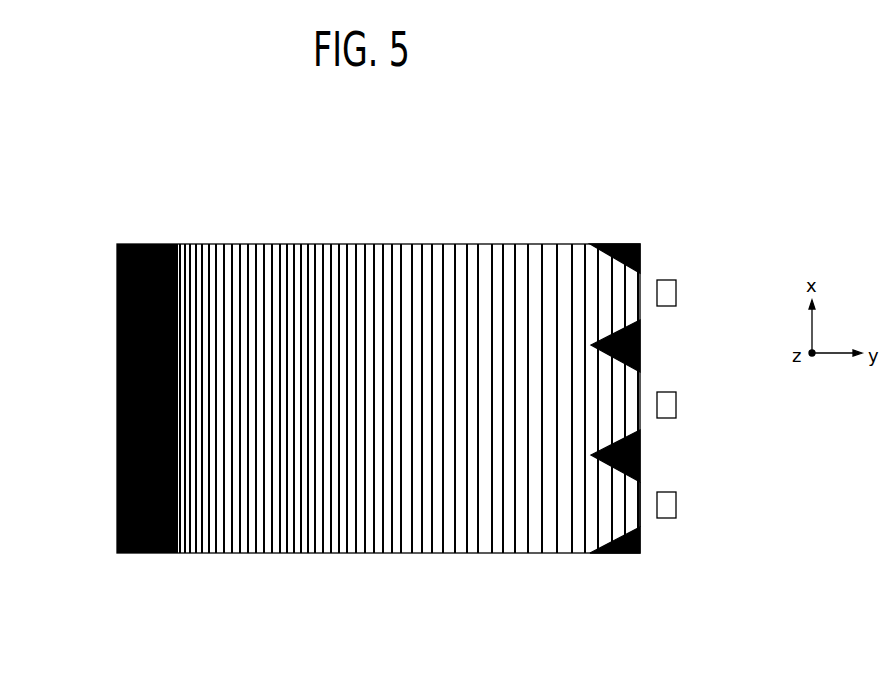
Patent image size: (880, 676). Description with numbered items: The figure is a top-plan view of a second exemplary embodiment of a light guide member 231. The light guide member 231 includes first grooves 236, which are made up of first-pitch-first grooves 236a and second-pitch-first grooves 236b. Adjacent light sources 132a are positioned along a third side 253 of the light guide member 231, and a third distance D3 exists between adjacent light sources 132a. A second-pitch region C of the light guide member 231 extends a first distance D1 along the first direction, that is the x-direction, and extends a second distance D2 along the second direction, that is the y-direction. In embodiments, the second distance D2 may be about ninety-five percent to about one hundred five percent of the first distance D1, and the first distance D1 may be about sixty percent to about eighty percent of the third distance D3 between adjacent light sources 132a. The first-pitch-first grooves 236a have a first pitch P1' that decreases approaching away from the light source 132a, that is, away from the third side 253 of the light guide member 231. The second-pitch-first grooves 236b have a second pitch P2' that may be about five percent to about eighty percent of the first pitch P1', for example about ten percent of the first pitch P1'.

The light guide member 231 is at (338, 338).
The first grooves 236 is at (410, 338).
The first-pitch-first grooves 236a is at (458, 244).
The second-pitch-first grooves 236b is at (601, 360).
The light sources 132a is at (665, 279).
The third side 253 is at (640, 517).
The second-pitch region C is at (635, 240).
The first distance D1 is at (640, 430).
The second distance D2 is at (590, 556).
The third distance D3 is at (676, 293).
The first pitch P1' is at (435, 582).
The second pitch P2' is at (668, 594).